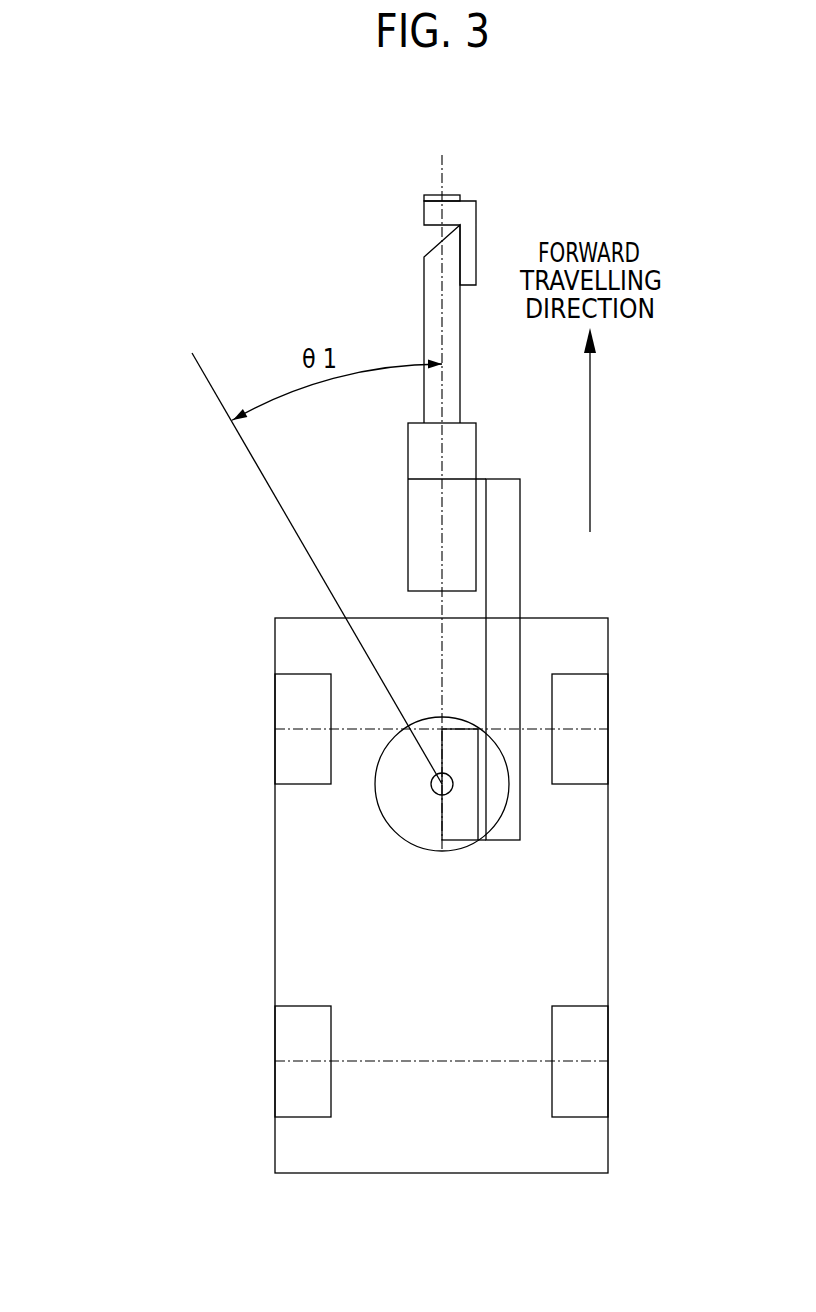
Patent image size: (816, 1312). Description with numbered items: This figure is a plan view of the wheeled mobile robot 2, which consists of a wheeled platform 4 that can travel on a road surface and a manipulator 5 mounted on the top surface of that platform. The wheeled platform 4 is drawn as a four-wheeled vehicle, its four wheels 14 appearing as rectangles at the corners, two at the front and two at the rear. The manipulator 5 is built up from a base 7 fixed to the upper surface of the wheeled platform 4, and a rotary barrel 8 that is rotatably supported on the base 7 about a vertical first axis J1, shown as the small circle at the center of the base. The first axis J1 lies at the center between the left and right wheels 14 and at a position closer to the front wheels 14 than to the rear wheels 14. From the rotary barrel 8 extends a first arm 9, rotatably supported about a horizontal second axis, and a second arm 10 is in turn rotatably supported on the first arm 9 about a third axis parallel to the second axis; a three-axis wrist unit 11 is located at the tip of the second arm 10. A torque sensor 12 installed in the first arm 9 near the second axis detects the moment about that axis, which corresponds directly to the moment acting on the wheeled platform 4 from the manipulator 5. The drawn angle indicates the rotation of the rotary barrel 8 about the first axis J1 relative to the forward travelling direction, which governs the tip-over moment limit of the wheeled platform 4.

The wheeled mobile robot 2 is at (118, 353).
The wheeled platform 4 is at (261, 905).
The manipulator 5 is at (576, 567).
The base 7 is at (383, 820).
The first axis J1 is at (433, 792).
The rotary barrel 8 is at (457, 841).
The first arm 9 is at (520, 643).
The second arm 10 is at (408, 514).
The wrist unit 11 is at (490, 229).
The torque sensor 12 is at (486, 820).
The wheels 14 is at (275, 752).